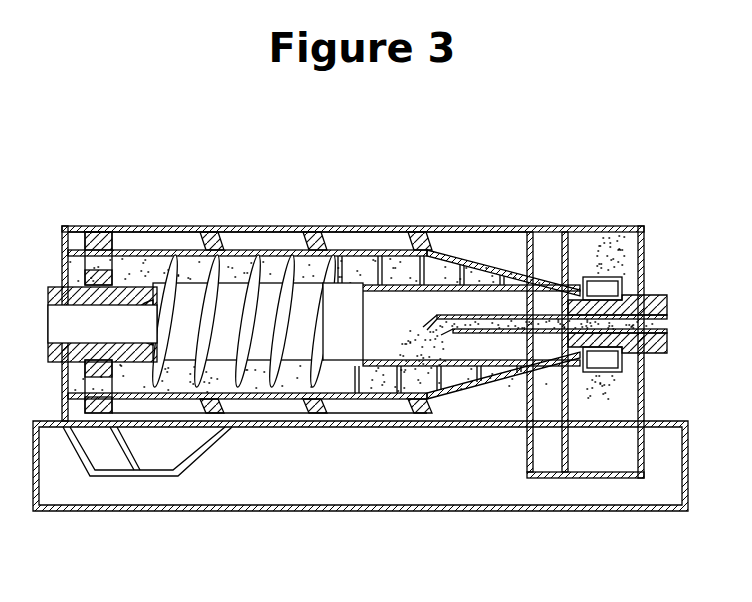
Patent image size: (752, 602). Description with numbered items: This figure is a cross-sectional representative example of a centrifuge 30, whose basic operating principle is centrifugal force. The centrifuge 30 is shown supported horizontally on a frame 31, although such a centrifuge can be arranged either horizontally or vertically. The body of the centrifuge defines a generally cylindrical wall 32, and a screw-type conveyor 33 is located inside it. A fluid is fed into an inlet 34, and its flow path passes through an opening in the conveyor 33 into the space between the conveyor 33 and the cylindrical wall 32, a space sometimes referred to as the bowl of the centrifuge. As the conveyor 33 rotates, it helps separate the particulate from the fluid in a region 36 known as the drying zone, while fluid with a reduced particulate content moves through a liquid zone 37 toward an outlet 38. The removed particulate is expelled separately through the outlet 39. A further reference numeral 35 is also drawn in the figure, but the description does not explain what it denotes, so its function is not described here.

The centrifuge 30 is at (506, 198).
The frame 31 is at (372, 512).
The cylindrical wall 32 is at (362, 405).
The screw-type conveyor 33 is at (346, 303).
The inlet 34 is at (658, 325).
The lower tapered chamber 35 is at (424, 408).
The drying zone 36 is at (446, 266).
The liquid zone 37 is at (242, 248).
The outlet 38 is at (97, 262).
The outlet 39 is at (589, 374).